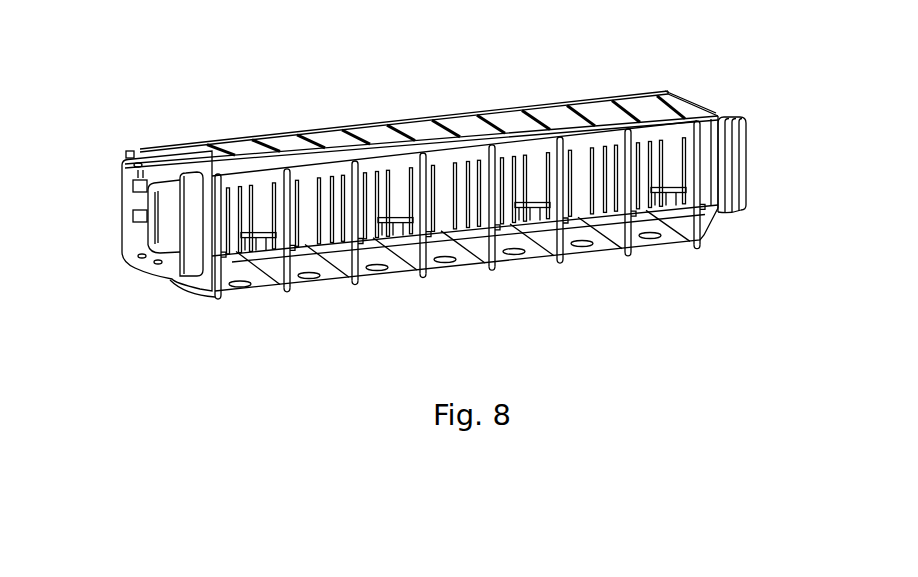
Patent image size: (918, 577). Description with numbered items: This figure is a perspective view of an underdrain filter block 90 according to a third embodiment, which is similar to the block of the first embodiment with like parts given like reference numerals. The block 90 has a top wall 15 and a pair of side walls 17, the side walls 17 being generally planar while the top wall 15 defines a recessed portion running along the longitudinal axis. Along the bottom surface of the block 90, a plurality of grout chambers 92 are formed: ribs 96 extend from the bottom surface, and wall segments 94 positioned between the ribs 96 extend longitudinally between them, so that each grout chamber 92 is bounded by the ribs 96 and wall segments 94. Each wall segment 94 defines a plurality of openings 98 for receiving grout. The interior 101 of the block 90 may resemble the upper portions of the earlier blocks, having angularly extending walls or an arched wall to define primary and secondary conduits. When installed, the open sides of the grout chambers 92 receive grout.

The underdrain filter block 90 is at (114, 133).
The top wall 15 is at (418, 126).
The side wall 17 is at (670, 142).
The interior 101 is at (158, 231).
The rib 96 is at (222, 182).
The wall segment 94 is at (215, 292).
The grout chamber 92 is at (272, 280).
The opening 98 is at (240, 289).